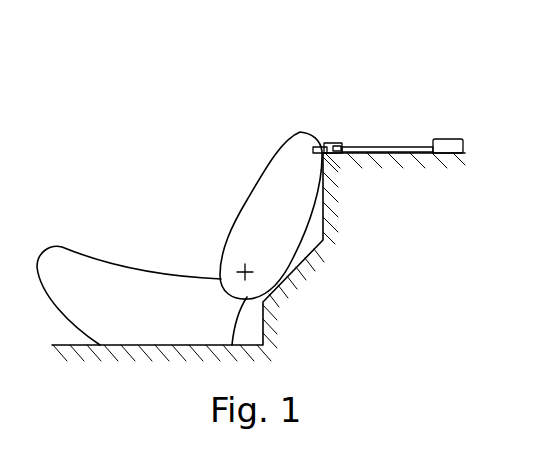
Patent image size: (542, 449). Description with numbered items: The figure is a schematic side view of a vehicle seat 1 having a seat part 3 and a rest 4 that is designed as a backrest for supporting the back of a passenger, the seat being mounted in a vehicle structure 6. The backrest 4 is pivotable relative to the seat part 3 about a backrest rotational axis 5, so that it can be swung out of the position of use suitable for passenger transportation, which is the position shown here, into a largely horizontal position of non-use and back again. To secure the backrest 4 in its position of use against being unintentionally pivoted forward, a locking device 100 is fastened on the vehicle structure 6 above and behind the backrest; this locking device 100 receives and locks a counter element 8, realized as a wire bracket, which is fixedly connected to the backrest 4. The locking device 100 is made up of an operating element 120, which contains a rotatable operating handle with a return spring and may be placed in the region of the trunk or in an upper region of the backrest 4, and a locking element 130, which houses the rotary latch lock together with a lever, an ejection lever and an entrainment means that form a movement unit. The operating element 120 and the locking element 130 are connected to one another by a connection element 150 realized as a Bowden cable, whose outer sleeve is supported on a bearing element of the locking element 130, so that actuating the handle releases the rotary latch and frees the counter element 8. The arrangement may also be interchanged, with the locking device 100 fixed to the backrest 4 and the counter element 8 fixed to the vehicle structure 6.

The vehicle seat 1 is at (206, 230).
The seat part 3 is at (80, 270).
The backrest 4 is at (258, 203).
The backrest rotational axis 5 is at (246, 266).
The vehicle structure 6 is at (297, 273).
The counter element 8 is at (325, 143).
The locking device 100 is at (393, 88).
The operating element 120 is at (449, 141).
The locking element 130 is at (342, 142).
The connection element 150 is at (388, 146).